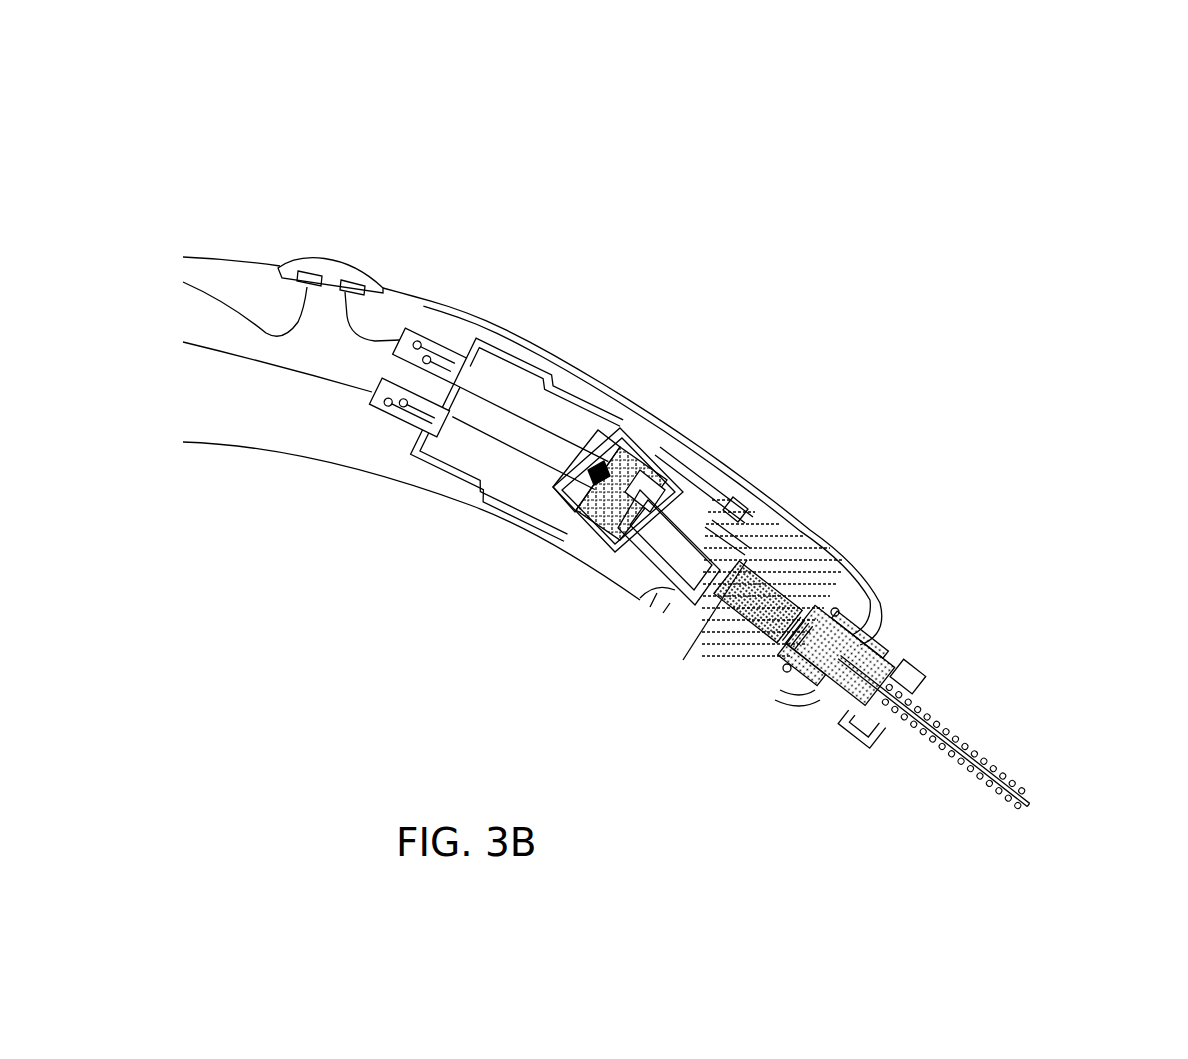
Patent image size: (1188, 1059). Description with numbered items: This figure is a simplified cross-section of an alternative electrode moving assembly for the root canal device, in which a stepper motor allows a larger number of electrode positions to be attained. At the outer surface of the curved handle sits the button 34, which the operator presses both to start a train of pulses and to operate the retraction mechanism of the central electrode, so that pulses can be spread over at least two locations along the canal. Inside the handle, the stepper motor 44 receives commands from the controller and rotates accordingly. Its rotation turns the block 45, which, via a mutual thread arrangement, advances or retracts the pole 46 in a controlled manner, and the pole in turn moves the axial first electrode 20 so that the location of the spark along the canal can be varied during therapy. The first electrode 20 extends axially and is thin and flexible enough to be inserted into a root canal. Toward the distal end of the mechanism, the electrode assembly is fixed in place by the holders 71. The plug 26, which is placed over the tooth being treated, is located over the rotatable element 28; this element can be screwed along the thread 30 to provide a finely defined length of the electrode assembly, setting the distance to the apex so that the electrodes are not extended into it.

The button 34 is at (325, 262).
The stepper motor 44 is at (598, 437).
The block 45 is at (657, 490).
The pole 46 is at (697, 548).
The holders 71 is at (836, 608).
The thread 30 is at (887, 647).
The rotatable element 28 is at (900, 657).
The first electrode 20 is at (1020, 790).
The plug 26 is at (865, 742).